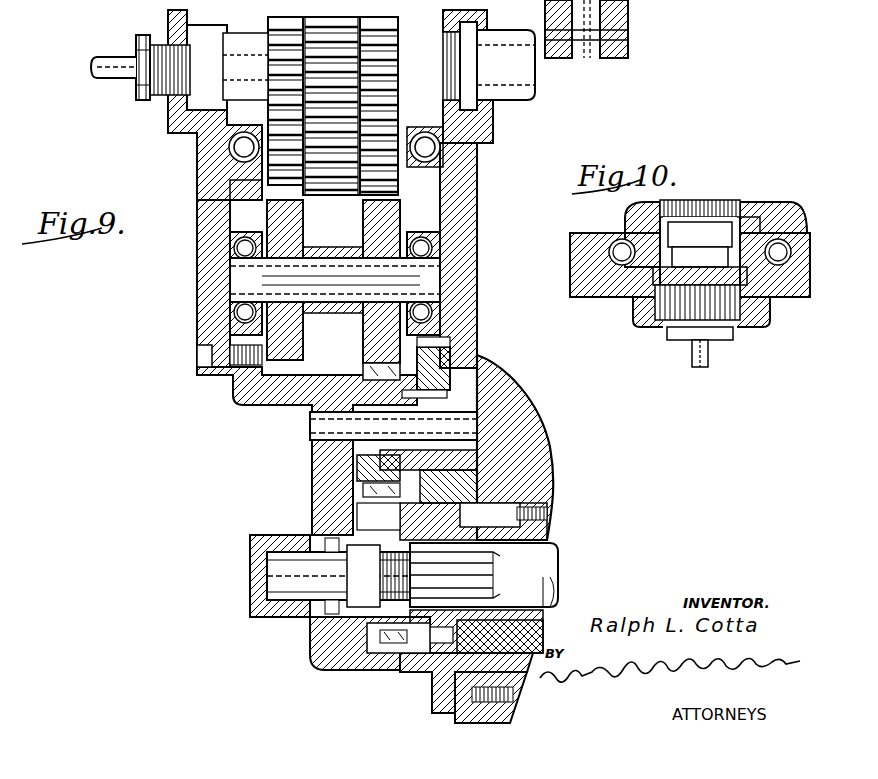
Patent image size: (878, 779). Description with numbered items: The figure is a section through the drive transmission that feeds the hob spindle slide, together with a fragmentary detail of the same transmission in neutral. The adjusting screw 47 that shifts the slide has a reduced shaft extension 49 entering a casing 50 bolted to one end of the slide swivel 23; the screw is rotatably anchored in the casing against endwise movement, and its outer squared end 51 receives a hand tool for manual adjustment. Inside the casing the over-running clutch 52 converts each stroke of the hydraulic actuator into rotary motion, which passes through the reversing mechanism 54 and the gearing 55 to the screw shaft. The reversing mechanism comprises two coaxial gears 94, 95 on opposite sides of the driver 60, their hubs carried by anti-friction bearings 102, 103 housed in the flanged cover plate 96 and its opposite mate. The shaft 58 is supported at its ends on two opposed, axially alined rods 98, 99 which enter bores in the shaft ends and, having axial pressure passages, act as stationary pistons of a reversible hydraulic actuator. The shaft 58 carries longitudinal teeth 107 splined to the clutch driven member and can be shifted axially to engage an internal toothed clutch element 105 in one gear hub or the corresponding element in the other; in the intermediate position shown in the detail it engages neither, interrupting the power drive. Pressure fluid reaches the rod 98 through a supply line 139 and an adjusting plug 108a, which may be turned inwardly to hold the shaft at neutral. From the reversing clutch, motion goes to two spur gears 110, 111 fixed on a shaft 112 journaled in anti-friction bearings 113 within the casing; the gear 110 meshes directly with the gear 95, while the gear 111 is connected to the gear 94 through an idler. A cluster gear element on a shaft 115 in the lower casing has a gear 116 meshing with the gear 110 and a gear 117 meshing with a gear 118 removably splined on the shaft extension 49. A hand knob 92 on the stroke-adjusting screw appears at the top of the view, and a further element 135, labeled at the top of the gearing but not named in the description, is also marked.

In FIG. 9, the slide swivel 23 is at (533, 447).
In FIG. 9, the adjusting screw 47 is at (562, 572).
In FIG. 9, the shaft extension 49 is at (522, 550).
In FIG. 9, the casing 50 is at (330, 657).
In FIG. 9, the squared end 51 is at (272, 573).
In FIG. 9, the over-running clutch 52 is at (323, 192).
In FIG. 10, the reversing mechanism 54 is at (744, 197).
In FIG. 9, the gearing 55 is at (357, 488).
In FIG. 10, the shaft 58 is at (730, 200).
In FIG. 9, the driver 60 is at (341, 186).
In FIG. 9, the hand knob 92 is at (628, 20).
In FIG. 9, the gear 94 is at (272, 60).
In FIG. 9, the gear 95 is at (380, 60).
In FIG. 9, the cover plate 96 is at (212, 296).
In FIG. 10, the cover plate 96 is at (590, 296).
In FIG. 9, the rod 98 is at (215, 88).
In FIG. 10, the rod 98 is at (668, 270).
In FIG. 9, the rod 99 is at (470, 70).
In FIG. 9, the anti-friction bearing 102 is at (240, 148).
In FIG. 10, the anti-friction bearing 102 is at (610, 258).
In FIG. 9, the anti-friction bearing 103 is at (430, 148).
In FIG. 10, the internal toothed clutch element 105 is at (650, 215).
In FIG. 10, the longitudinal teeth 107 is at (705, 200).
In FIG. 9, the adjusting plug 108a is at (149, 26).
In FIG. 10, the adjusting plug 108a is at (722, 332).
In FIG. 9, the spur gear 110 is at (376, 358).
In FIG. 9, the spur gear 111 is at (246, 376).
In FIG. 9, the shaft 112 is at (331, 280).
In FIG. 9, the anti-friction bearings 113 is at (236, 251).
In FIG. 9, the shaft 115 is at (330, 423).
In FIG. 9, the gear 116 is at (370, 467).
In FIG. 9, the gear 117 is at (440, 358).
In FIG. 9, the gear 118 is at (415, 630).
In FIG. 9, the gear 135 is at (345, 3).
In FIG. 9, the supply line 139 is at (115, 70).
In FIG. 10, the supply line 139 is at (695, 352).